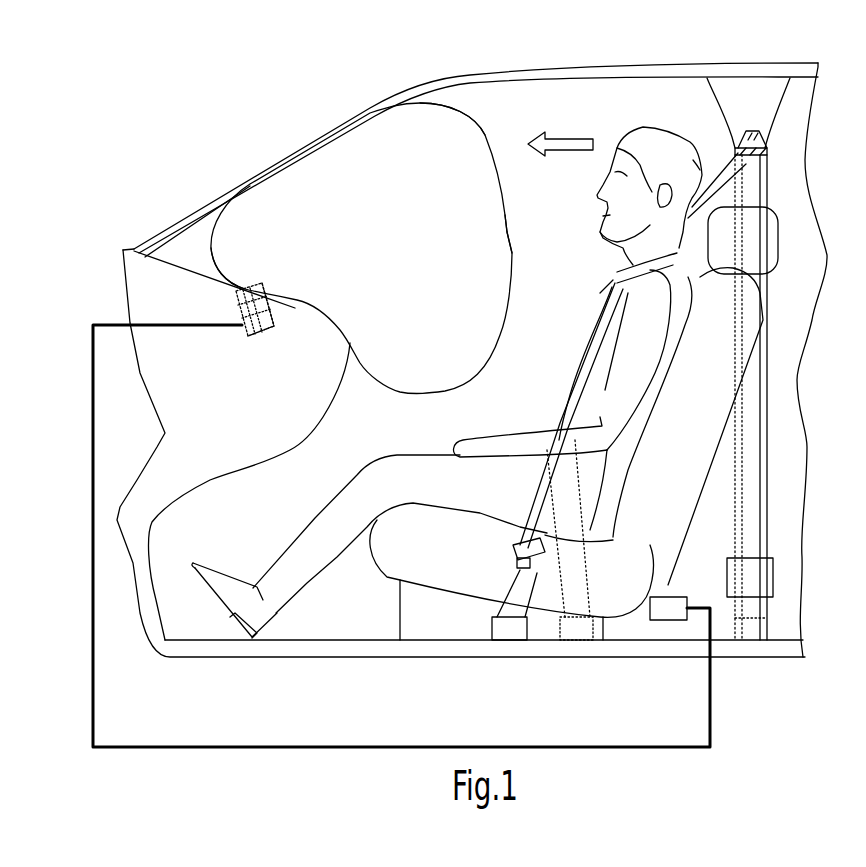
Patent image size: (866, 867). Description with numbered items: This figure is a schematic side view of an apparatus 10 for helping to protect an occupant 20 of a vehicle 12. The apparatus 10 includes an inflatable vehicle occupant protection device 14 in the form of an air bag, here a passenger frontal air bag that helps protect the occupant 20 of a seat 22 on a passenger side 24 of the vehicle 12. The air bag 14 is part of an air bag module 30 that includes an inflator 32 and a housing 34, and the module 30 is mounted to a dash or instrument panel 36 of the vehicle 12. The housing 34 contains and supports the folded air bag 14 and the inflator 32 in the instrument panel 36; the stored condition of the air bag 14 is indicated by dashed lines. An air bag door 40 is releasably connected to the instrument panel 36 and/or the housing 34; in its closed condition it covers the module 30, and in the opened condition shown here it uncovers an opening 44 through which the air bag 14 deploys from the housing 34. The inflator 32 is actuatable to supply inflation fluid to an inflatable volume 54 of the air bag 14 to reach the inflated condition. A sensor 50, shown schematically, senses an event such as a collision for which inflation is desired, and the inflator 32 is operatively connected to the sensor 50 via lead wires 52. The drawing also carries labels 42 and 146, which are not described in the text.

The apparatus 10 is at (152, 190).
The vehicle 12 is at (161, 132).
The inflatable vehicle occupant protection device 14 is at (277, 313).
The occupant 20 is at (648, 157).
The seat 22 is at (703, 358).
The passenger side 24 is at (515, 150).
The air bag module 30 is at (215, 300).
The inflator 32 is at (248, 332).
The housing 34 is at (262, 338).
The instrument panel 36 is at (298, 418).
The air bag door 40 is at (210, 273).
The occupant movement direction 42 is at (560, 132).
The opening 44 is at (276, 276).
The sensor 50 is at (665, 613).
The lead wires 52 is at (205, 746).
The inflatable volume 54 is at (446, 193).
The airbag panel 146 is at (463, 217).